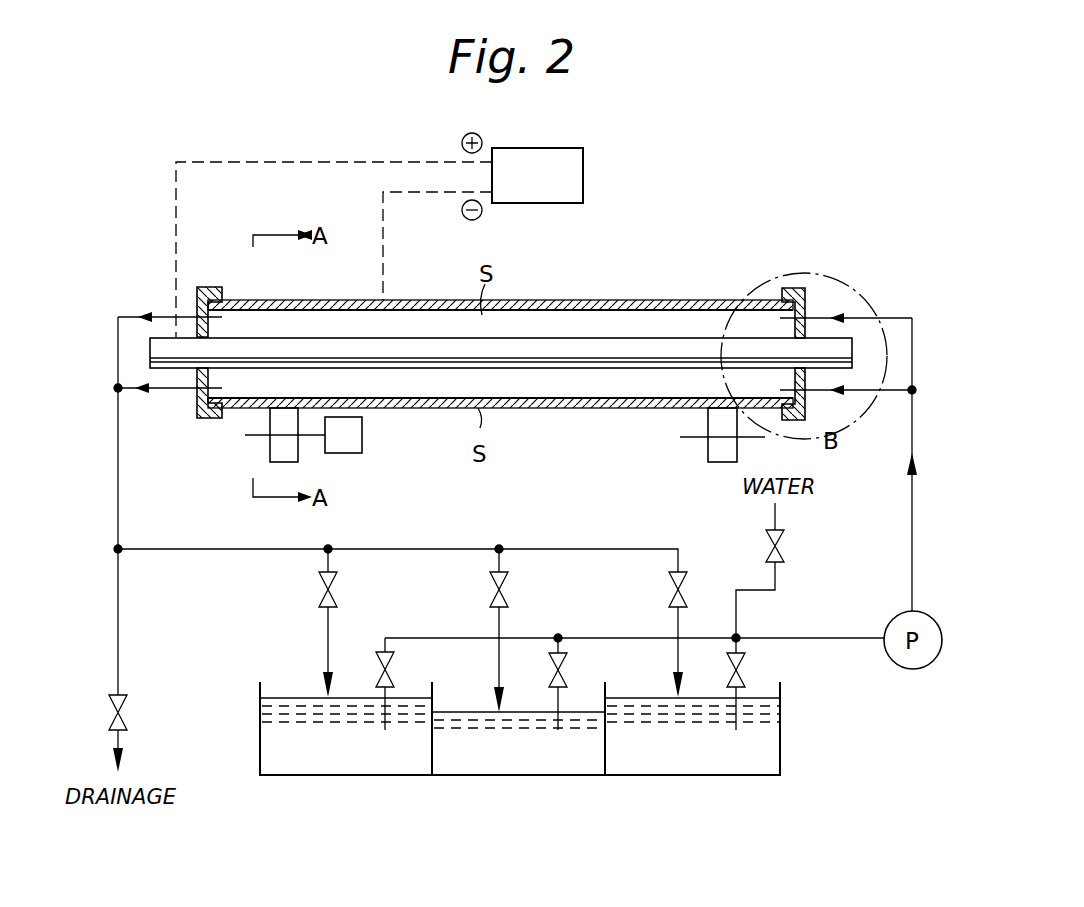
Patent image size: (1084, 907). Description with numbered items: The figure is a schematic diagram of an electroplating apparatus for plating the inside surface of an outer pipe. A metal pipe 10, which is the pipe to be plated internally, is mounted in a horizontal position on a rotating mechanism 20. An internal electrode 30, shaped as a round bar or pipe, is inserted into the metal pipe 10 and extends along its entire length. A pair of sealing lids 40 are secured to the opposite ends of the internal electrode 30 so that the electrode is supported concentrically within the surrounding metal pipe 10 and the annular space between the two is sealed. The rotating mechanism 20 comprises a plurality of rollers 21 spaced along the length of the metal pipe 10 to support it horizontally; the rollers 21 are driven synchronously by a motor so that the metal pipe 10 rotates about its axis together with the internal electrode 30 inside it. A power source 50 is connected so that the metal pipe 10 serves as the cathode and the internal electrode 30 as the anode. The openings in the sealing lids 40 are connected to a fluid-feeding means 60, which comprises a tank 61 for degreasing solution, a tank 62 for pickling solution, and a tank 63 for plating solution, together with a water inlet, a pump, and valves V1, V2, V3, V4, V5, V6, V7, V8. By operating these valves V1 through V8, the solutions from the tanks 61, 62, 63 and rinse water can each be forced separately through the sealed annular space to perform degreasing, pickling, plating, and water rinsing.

The metal pipe 10 is at (590, 300).
The rotating mechanism 20 is at (265, 455).
The rollers 21 is at (298, 461).
The internal electrode 30 is at (650, 340).
The sealing lids 40 is at (197, 290).
The power source 50 is at (583, 178).
The fluid-feeding means 60 is at (573, 754).
The tank for degreasing solution 61 is at (345, 776).
The tank for pickling solution 62 is at (518, 776).
The tank for plating solution 63 is at (690, 776).
The valve V1 is at (400, 669).
The valve V2 is at (574, 670).
The valve V3 is at (752, 670).
The valve V4 is at (343, 589).
The valve V5 is at (515, 589).
The valve V6 is at (693, 589).
The valve V7 is at (791, 546).
The valve V8 is at (134, 712).